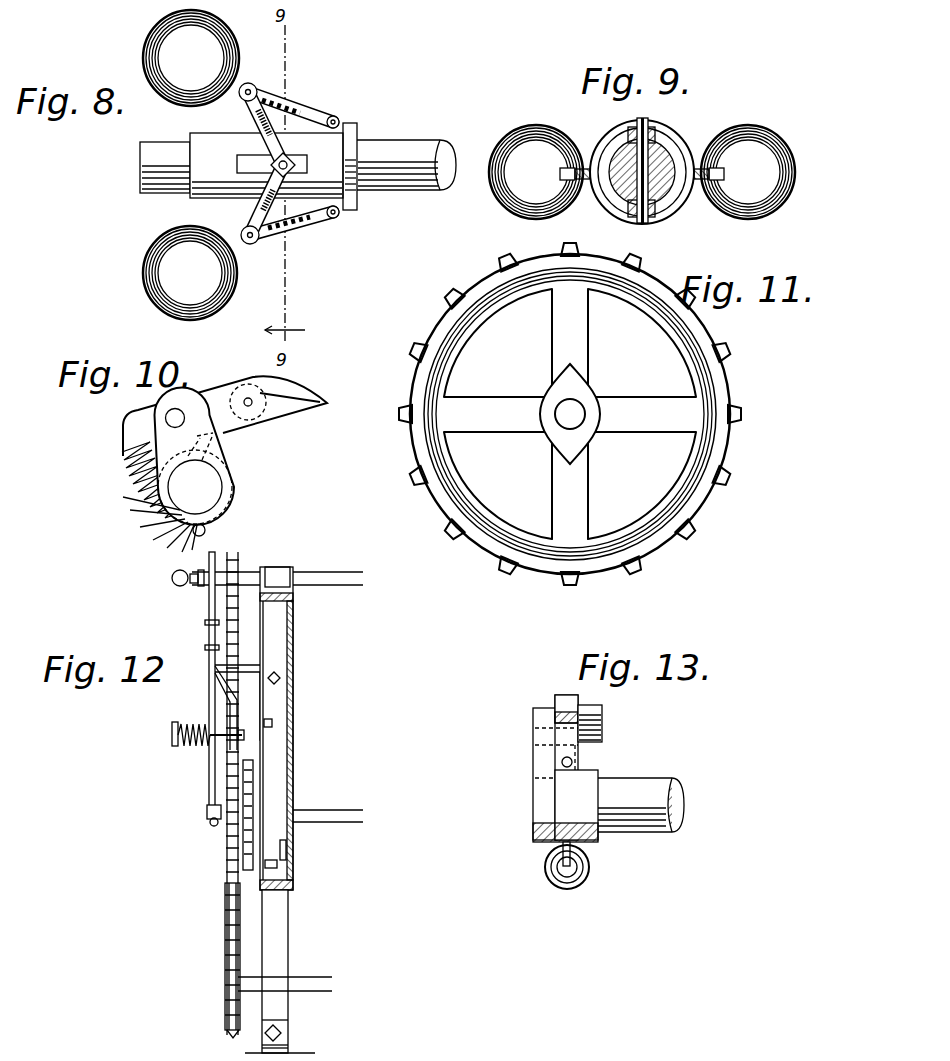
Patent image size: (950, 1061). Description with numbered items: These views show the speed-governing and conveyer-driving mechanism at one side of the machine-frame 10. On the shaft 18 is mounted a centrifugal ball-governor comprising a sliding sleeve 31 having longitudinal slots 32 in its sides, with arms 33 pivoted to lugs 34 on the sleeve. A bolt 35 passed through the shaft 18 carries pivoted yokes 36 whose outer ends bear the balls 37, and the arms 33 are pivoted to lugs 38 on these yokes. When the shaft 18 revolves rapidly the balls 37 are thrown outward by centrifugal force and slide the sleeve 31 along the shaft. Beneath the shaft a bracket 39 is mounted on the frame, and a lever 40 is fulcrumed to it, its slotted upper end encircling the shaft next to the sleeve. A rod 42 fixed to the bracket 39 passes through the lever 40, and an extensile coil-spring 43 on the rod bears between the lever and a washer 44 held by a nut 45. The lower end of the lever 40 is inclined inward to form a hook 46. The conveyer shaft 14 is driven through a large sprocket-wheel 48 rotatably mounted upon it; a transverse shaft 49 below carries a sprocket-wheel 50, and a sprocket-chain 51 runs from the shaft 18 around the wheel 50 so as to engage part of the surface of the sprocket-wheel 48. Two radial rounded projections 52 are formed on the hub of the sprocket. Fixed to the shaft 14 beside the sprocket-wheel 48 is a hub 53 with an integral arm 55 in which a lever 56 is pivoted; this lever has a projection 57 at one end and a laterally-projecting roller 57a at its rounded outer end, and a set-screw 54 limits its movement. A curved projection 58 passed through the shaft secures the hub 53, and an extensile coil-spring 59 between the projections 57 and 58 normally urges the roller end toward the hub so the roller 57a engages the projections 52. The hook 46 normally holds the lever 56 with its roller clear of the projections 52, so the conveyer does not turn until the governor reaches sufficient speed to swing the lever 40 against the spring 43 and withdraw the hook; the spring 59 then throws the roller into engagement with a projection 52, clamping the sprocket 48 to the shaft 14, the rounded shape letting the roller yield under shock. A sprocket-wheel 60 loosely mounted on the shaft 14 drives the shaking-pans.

In FIG. 12, the post 10 is at (273, 859).
In FIG. 10, the shaft 14 is at (210, 497).
In FIG. 12, the shaft 14 is at (347, 816).
In FIG. 13, the shaft 14 is at (660, 790).
In FIG. 8, the shaft 18 is at (418, 152).
In FIG. 9, the shaft 18 is at (658, 192).
In FIG. 12, the shaft 18 is at (351, 585).
In FIG. 8, the sliding sleeve 31 is at (273, 166).
In FIG. 9, the sliding sleeve 31 is at (627, 202).
In FIG. 8, the longitudinal slots 32 is at (306, 166).
In FIG. 8, the arms 33 is at (300, 110).
In FIG. 9, the arms 33 is at (580, 167).
In FIG. 8, the lugs 34 is at (342, 119).
In FIG. 8, the bolt 35 is at (290, 160).
In FIG. 9, the bolt 35 is at (645, 123).
In FIG. 8, the yokes 36 is at (228, 221).
In FIG. 9, the yokes 36 is at (603, 204).
In FIG. 8, the balls 37 is at (191, 165).
In FIG. 9, the balls 37 is at (642, 172).
In FIG. 12, the balls 37 is at (180, 587).
In FIG. 8, the lugs 38 is at (254, 247).
In FIG. 12, the bracket 39 is at (275, 698).
In FIG. 12, the lever 40 is at (207, 606).
In FIG. 12, the rod 42 is at (205, 745).
In FIG. 12, the extensile coil-spring 43 is at (193, 721).
In FIG. 12, the washer 44 is at (175, 742).
In FIG. 12, the nut 45 is at (172, 735).
In FIG. 12, the hook 46 is at (212, 824).
In FIG. 11, the large sprocket-wheel 48 is at (722, 461).
In FIG. 12, the large sprocket-wheel 48 is at (230, 853).
In FIG. 12, the shaft 49 is at (317, 983).
In FIG. 12, the sprocket-wheel 50 is at (232, 1035).
In FIG. 12, the sprocket-chain 51 is at (228, 938).
In FIG. 11, the radial rounded projections 52 is at (585, 370).
In FIG. 10, the hub 53 is at (231, 488).
In FIG. 13, the hub 53 is at (590, 832).
In FIG. 13, the set-screw 54 is at (574, 762).
In FIG. 10, the integral arm 55 is at (188, 419).
In FIG. 13, the integral arm 55 is at (538, 719).
In FIG. 10, the lever 56 is at (308, 408).
In FIG. 12, the lever 56 is at (207, 812).
In FIG. 13, the lever 56 is at (568, 702).
In FIG. 10, the projection 57 is at (124, 463).
In FIG. 13, the laterally-projecting roller 57a is at (602, 715).
In FIG. 10, the curved projection 58 is at (207, 531).
In FIG. 13, the curved projection 58 is at (590, 868).
In FIG. 10, the extensile coil-spring 59 is at (170, 517).
In FIG. 13, the extensile coil-spring 59 is at (565, 889).
In FIG. 12, the sprocket-wheel 60 is at (250, 786).